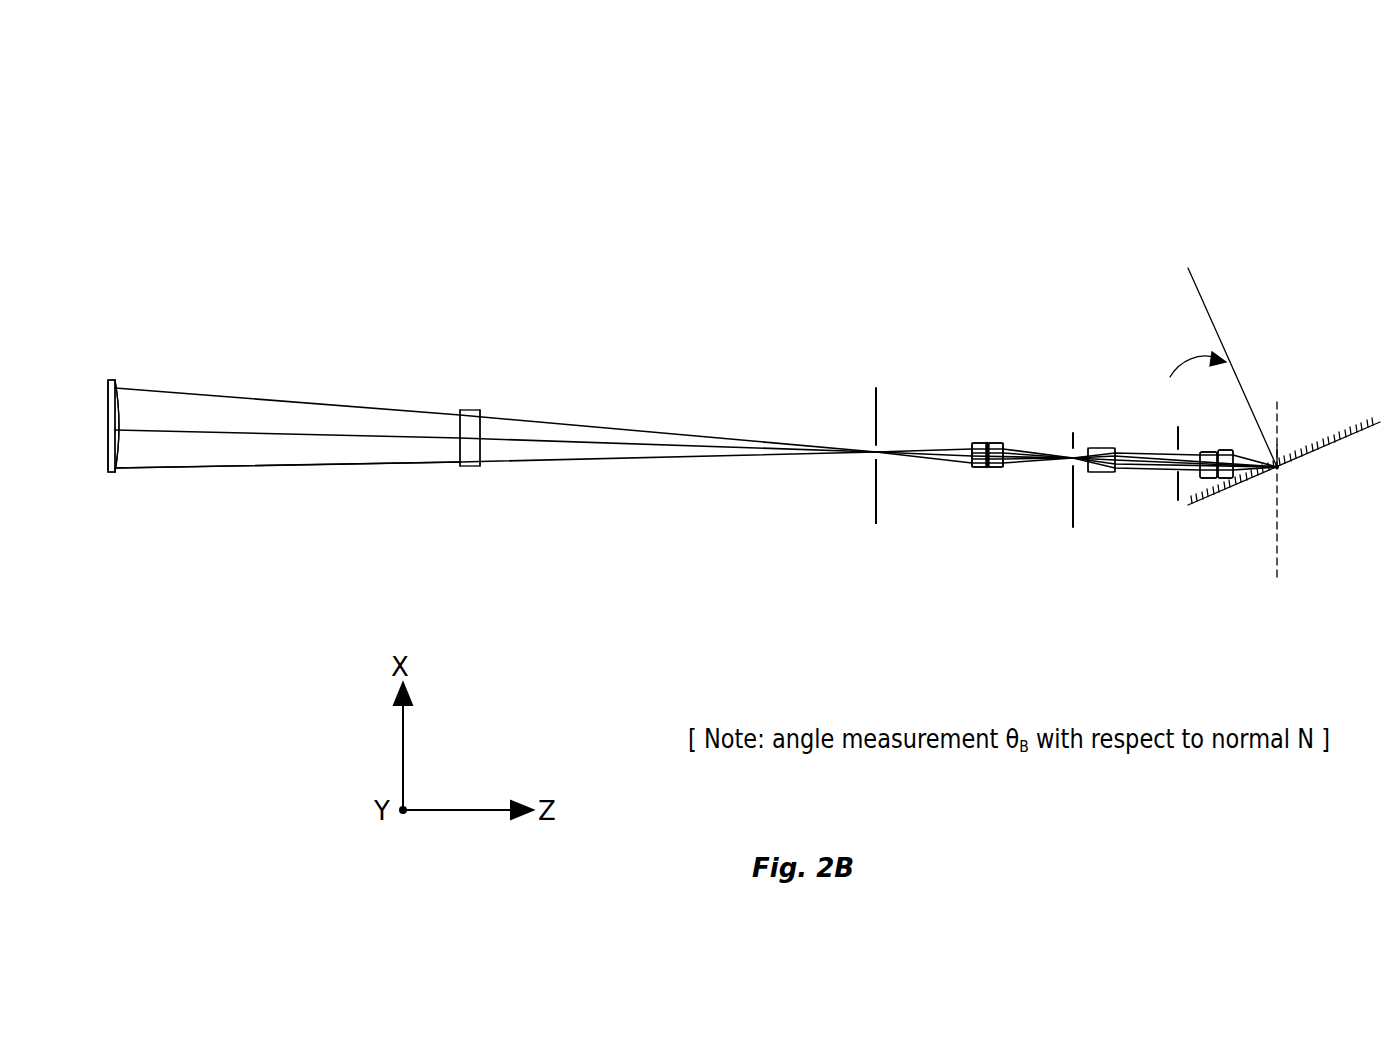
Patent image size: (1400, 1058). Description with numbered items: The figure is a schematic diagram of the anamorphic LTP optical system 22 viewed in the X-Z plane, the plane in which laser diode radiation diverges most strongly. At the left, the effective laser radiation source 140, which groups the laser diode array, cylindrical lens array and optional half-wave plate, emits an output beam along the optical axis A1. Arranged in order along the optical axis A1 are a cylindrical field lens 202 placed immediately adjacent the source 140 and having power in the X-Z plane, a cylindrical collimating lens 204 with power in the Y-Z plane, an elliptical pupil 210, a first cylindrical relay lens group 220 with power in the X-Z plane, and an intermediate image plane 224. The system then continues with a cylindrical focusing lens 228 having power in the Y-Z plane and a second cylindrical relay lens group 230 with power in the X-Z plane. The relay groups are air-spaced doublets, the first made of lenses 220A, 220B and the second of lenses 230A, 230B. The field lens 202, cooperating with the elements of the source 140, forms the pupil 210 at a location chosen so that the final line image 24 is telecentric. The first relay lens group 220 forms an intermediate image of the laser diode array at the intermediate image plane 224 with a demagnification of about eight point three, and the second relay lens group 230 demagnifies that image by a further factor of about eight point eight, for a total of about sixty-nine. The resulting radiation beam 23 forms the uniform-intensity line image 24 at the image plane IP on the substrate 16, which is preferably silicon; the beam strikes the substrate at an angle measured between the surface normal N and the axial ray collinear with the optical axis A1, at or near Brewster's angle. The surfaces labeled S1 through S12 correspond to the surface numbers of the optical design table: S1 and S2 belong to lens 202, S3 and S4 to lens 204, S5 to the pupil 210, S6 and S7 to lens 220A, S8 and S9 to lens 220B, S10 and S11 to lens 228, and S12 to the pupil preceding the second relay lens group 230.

The LTP optical system 22 is at (658, 254).
The effective laser radiation source 140 is at (108, 400).
The cylindrical field lens 202 is at (113, 380).
The cylindrical collimating lens 204 is at (468, 410).
The elliptical pupil 210 is at (873, 430).
The first cylindrical relay lens group 220 is at (1004, 433).
The lens 220A is at (967, 447).
The lens 220B is at (1010, 447).
The intermediate image plane 224 is at (1073, 518).
The cylindrical focusing lens 228 is at (1105, 448).
The second cylindrical relay lens group 230 is at (1235, 445).
The lens 230A is at (1138, 435).
The lens 230B is at (1250, 450).
The surface normal N is at (1202, 287).
The substrate 16 is at (1230, 483).
The radiation beam 23 is at (1278, 445).
The line image 24 is at (1283, 467).
The image plane IP is at (1280, 540).
The surface S1 is at (107, 445).
The surface S2 is at (123, 453).
The surface S3 is at (457, 427).
The surface S4 is at (483, 427).
The surface S5 is at (877, 482).
The surface S6 is at (953, 467).
The surface S7 is at (977, 468).
The surface S8 is at (1000, 468).
The surface S9 is at (1027, 463).
The surface S10 is at (1088, 474).
The surface S11 is at (1117, 472).
The surface S12 is at (1177, 487).
The optical axis A1 is at (257, 440).